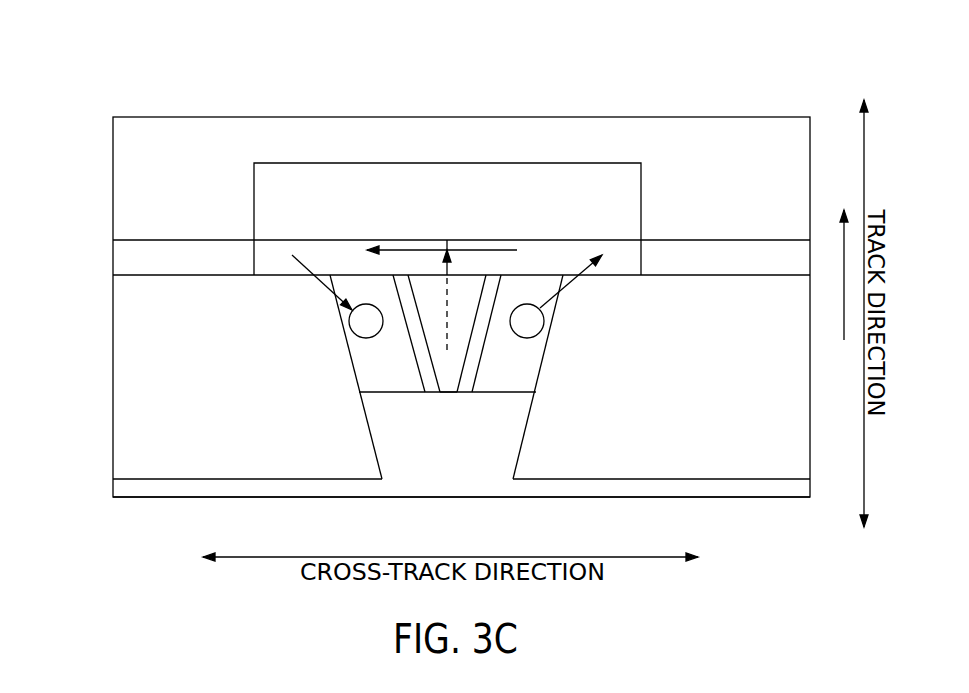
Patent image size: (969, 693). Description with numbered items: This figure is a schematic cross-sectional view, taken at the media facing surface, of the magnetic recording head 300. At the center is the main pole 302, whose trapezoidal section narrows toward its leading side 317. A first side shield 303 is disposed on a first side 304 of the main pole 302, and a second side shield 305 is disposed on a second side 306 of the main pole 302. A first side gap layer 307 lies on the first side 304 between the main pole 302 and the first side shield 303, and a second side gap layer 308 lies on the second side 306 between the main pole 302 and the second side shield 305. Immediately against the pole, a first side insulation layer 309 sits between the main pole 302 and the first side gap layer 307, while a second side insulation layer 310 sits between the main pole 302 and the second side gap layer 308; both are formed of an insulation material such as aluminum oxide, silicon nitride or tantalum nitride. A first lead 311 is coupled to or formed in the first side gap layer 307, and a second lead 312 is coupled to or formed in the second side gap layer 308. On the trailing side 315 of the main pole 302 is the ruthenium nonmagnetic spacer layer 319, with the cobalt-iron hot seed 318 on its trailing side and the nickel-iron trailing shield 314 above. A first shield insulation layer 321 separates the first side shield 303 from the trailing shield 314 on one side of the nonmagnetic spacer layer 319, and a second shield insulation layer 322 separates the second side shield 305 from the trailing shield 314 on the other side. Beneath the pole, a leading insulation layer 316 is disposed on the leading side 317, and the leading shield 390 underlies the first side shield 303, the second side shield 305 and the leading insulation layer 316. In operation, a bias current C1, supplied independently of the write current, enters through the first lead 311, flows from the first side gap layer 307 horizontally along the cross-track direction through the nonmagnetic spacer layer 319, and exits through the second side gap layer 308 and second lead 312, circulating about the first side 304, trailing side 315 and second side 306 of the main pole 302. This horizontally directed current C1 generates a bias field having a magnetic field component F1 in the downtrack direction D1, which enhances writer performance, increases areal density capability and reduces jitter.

The magnetic recording head 300 is at (142, 65).
The main pole 302 is at (468, 309).
The first side shield 303 is at (735, 411).
The first side 304 is at (598, 305).
The second side shield 305 is at (205, 416).
The second side 306 is at (303, 305).
The first side gap layer 307 is at (528, 357).
The second side gap layer 308 is at (382, 367).
The first side insulation layer 309 is at (472, 365).
The second side insulation layer 310 is at (418, 373).
The first lead 311 is at (545, 332).
The second lead 312 is at (351, 341).
The trailing shield 314 is at (202, 186).
The trailing side 315 is at (448, 220).
The leading insulation layer 316 is at (443, 459).
The leading side 317 is at (453, 403).
The hot seed 318 is at (342, 219).
The nonmagnetic spacer layer 319 is at (565, 266).
The first shield insulation layer 321 is at (748, 266).
The second shield insulation layer 322 is at (178, 269).
The leading shield 390 is at (715, 487).
The current C1 is at (408, 250).
The magnetic field component F1 is at (443, 282).
The downtrack direction D1 is at (843, 290).